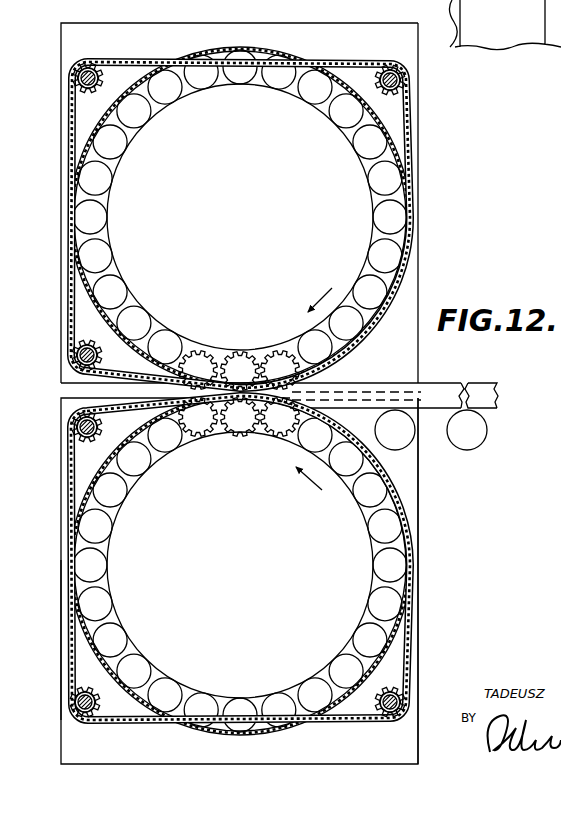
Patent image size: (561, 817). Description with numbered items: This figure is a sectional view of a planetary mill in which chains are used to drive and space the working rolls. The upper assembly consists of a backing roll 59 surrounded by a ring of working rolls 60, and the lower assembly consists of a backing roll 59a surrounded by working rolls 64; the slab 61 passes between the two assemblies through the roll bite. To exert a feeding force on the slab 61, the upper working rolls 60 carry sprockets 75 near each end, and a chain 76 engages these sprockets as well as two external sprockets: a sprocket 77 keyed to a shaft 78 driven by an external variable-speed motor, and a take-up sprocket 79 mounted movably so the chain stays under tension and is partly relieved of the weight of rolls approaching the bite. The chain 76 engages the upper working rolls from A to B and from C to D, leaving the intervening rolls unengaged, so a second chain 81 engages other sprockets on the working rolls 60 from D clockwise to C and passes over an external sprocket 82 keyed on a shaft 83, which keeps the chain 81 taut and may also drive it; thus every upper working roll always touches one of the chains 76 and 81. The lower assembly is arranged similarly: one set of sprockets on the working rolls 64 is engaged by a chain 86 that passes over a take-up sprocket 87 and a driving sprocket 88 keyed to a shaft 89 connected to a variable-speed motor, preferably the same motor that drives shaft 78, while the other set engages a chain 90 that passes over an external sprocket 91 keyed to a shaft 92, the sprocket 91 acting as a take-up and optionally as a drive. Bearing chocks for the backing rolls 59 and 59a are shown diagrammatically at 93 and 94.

The backing roll 59 is at (240, 217).
The backing roll 59a is at (240, 565).
The working roll 60 is at (220, 340).
The slab 61 is at (427, 383).
The working roll 64 is at (245, 437).
The sprocket 75 is at (243, 353).
The chain 76 is at (70, 384).
The sprocket 77 is at (72, 345).
The shaft 78 is at (76, 356).
The take-up sprocket 79 is at (404, 85).
The chain 81 is at (62, 131).
The sprocket 82 is at (76, 73).
The shaft 83 is at (79, 84).
The chain 86 is at (62, 494).
The take-up sprocket 87 is at (404, 696).
The driving sprocket 88 is at (74, 438).
The shaft 89 is at (76, 428).
The chain 90 is at (62, 638).
The sprocket 91 is at (74, 707).
The shaft 92 is at (73, 698).
The bearing chock 93 is at (418, 276).
The bearing chock 94 is at (419, 500).
The working roll position A is at (390, 217).
The working roll position B is at (240, 371).
The working roll position C is at (90, 217).
The working roll position D is at (240, 67).